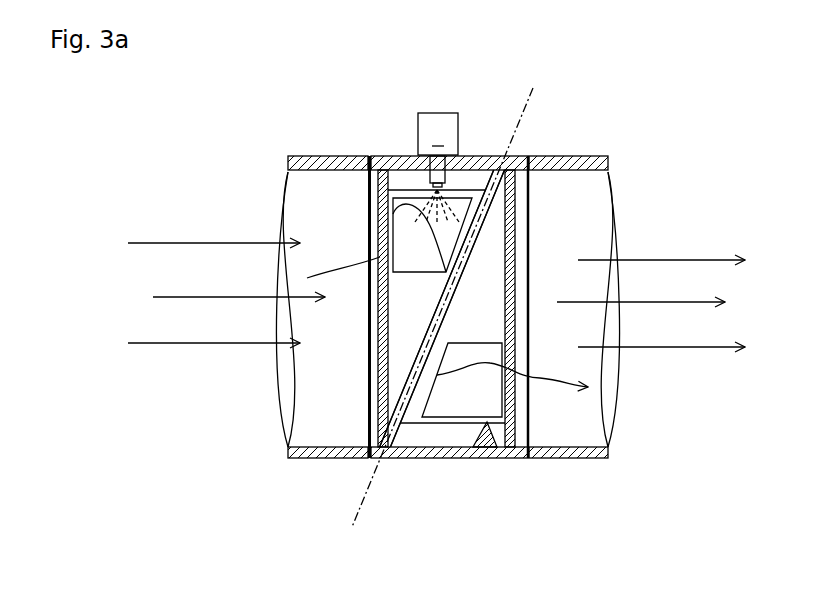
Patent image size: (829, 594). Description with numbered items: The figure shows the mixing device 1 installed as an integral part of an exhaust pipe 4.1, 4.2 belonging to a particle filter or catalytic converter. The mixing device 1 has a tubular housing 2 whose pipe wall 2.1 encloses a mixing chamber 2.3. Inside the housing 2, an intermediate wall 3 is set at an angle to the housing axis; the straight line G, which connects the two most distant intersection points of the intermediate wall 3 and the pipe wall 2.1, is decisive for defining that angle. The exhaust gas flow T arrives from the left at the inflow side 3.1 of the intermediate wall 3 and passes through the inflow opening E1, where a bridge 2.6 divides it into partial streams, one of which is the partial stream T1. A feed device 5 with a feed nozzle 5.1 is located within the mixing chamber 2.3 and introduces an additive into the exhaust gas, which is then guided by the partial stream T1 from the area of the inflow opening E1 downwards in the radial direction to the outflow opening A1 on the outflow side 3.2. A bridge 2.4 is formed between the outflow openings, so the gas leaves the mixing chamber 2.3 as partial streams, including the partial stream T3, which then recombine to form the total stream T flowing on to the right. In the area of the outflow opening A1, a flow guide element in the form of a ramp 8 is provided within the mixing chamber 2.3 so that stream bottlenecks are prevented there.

The mixing device 1 is at (378, 127).
The tubular housing 2 is at (450, 470).
The pipe wall 2.1 is at (430, 458).
The mixing chamber 2.3 is at (497, 319).
The bridge 2.4 is at (494, 408).
The bridge 2.6 is at (380, 200).
The intermediate wall 3 is at (448, 304).
The inflow side 3.1 is at (412, 361).
The outflow side 3.2 is at (468, 273).
The exhaust pipe 4.1 is at (302, 156).
The exhaust pipe 4.2 is at (598, 156).
The feed device 5 is at (438, 134).
The feed nozzle 5.1 is at (446, 168).
The ramp 8 is at (493, 458).
The inflow opening E1 is at (406, 246).
The outflow opening A1 is at (508, 407).
The partial stream T1 is at (356, 268).
The partial stream T3 is at (542, 372).
The exhaust gas flow T is at (175, 268).
The straight line G is at (367, 491).